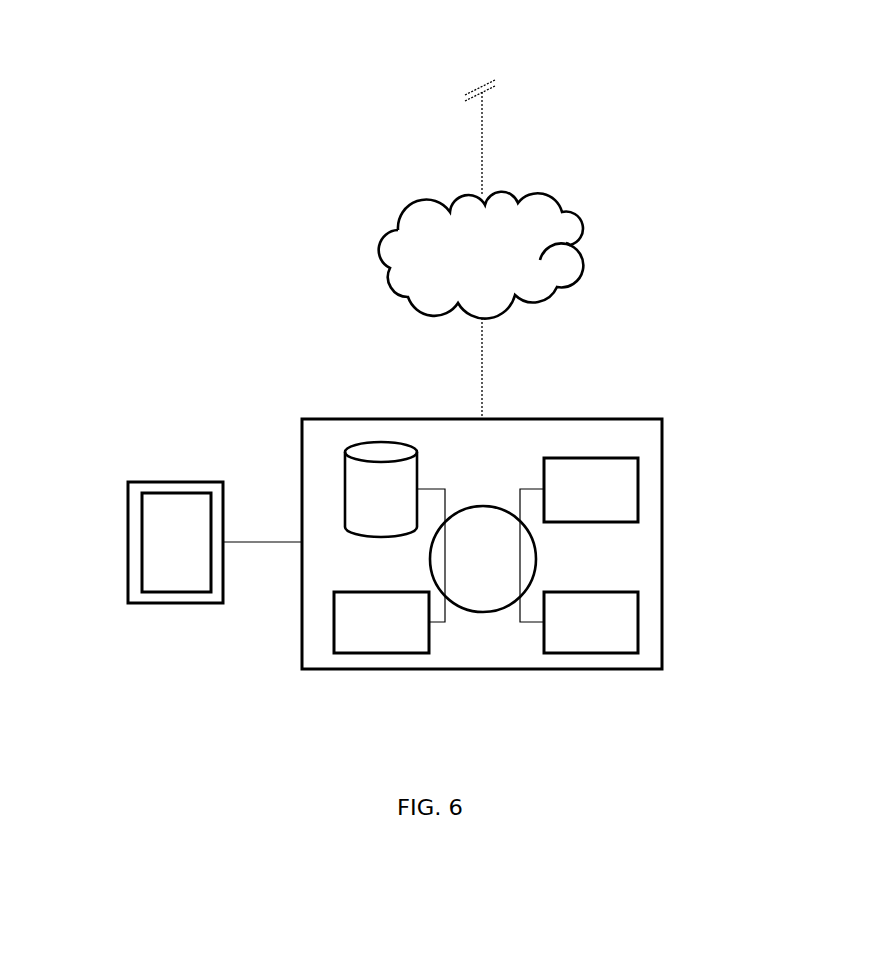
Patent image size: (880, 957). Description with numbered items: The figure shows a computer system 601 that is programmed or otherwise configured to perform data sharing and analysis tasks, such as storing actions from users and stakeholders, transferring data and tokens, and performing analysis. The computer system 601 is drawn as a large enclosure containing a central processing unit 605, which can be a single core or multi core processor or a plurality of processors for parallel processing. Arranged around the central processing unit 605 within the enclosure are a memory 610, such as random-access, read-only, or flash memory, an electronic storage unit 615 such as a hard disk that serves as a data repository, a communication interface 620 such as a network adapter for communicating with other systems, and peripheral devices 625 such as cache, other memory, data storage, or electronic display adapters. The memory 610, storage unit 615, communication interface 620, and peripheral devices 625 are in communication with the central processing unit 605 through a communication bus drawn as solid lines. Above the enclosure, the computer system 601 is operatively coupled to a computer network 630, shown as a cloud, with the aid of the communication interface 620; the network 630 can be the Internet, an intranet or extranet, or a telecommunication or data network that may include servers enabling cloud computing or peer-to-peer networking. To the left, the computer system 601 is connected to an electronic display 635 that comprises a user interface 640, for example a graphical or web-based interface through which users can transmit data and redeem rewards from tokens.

The computer system 601 is at (622, 432).
The central processing unit 605 is at (483, 559).
The memory 610 is at (354, 637).
The electronic storage unit 615 is at (368, 471).
The communication interface 620 is at (622, 497).
The peripheral devices 625 is at (622, 625).
The computer network 630 is at (562, 207).
The electronic display 635 is at (217, 485).
The user interface 640 is at (168, 536).